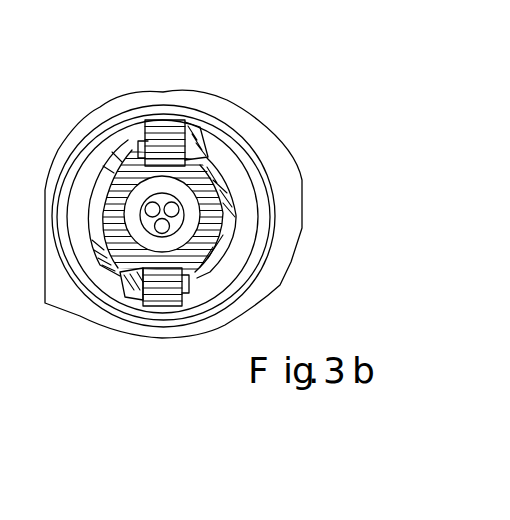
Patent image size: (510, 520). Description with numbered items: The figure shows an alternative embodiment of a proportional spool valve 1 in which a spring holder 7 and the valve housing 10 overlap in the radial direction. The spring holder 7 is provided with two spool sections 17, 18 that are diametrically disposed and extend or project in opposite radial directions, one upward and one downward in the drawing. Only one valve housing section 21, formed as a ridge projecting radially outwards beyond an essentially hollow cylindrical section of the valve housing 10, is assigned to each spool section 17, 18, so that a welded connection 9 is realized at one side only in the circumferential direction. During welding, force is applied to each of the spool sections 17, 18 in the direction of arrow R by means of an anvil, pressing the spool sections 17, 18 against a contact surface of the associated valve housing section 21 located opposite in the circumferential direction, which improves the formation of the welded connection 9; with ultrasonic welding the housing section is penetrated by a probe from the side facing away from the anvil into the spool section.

The proportional spool valve 1 is at (86, 358).
The spring holder 7 is at (228, 166).
The welded connection 9 is at (207, 155).
The housing ring 10 is at (204, 178).
The spool section 17 is at (192, 118).
The spool section 18 is at (151, 308).
The valve housing section 21 is at (137, 346).
The arrow (direction of force application) R is at (73, 138).